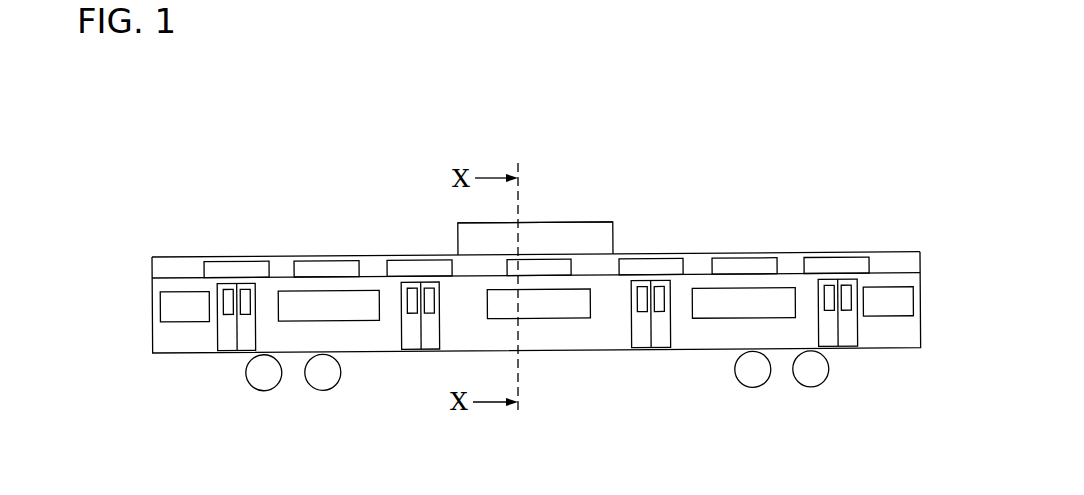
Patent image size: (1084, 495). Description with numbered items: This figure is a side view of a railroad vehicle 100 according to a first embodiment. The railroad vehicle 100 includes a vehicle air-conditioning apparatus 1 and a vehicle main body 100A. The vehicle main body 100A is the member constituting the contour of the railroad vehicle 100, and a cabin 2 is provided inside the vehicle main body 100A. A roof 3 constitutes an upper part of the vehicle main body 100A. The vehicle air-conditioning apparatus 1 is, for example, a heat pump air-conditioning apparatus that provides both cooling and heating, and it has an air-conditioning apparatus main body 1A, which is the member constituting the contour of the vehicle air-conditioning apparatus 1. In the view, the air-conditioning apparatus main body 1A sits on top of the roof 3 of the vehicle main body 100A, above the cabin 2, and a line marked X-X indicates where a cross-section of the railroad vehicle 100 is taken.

The railroad vehicle 100 is at (872, 225).
The vehicle main body 100A is at (827, 250).
The vehicle air-conditioning apparatus 1 is at (614, 228).
The air-conditioning apparatus main body 1A is at (558, 222).
The cabin 2 is at (783, 282).
The roof 3 is at (692, 252).